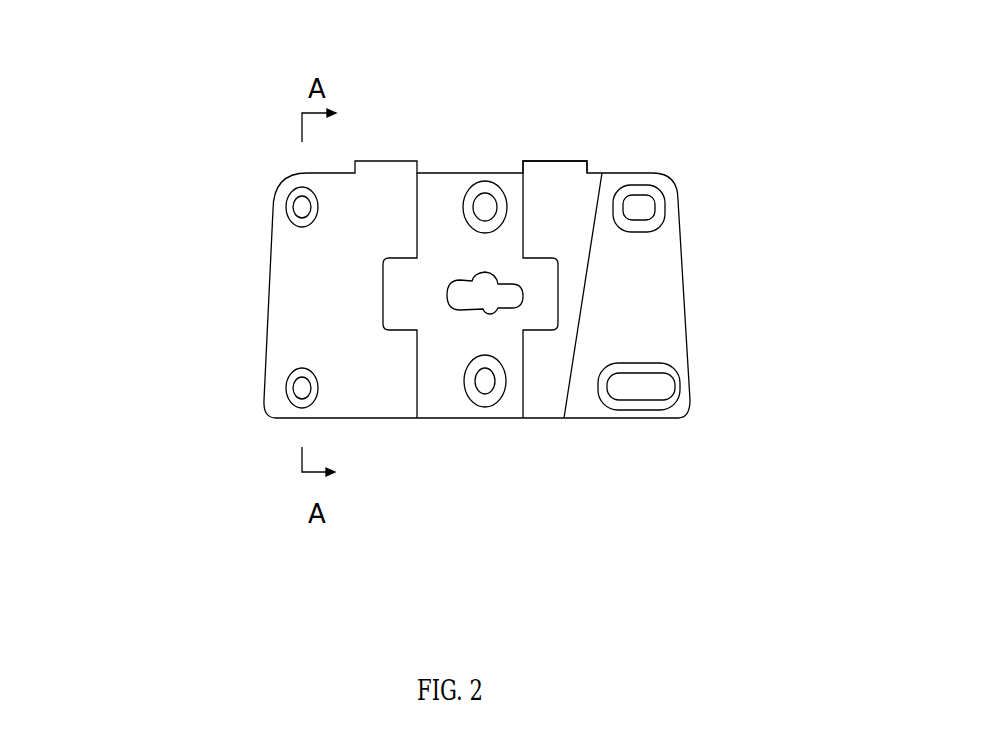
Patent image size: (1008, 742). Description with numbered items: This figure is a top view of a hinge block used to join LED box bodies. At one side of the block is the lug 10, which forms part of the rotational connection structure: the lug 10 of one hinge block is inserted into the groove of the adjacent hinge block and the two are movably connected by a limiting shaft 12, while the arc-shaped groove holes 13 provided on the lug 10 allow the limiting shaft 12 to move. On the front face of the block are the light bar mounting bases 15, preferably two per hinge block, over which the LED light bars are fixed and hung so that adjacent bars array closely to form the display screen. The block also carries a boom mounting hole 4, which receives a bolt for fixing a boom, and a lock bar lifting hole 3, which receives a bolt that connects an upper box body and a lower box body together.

The lug 10 is at (577, 405).
The light bar mounting base 15 is at (558, 168).
The lock bar lifting hole 3 is at (483, 293).
The boom mounting hole 4 is at (488, 385).
The limiting shaft 12 is at (302, 207).
The arc-shaped groove hole 13 is at (653, 207).